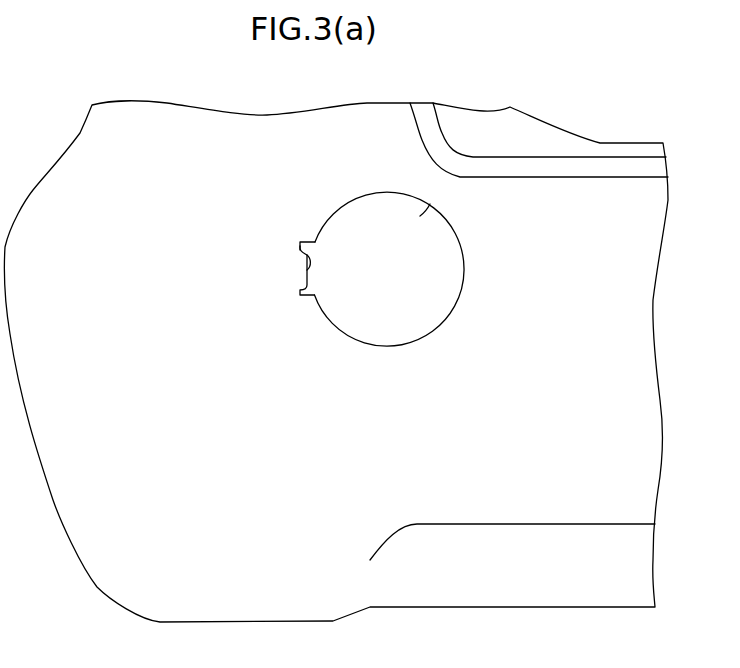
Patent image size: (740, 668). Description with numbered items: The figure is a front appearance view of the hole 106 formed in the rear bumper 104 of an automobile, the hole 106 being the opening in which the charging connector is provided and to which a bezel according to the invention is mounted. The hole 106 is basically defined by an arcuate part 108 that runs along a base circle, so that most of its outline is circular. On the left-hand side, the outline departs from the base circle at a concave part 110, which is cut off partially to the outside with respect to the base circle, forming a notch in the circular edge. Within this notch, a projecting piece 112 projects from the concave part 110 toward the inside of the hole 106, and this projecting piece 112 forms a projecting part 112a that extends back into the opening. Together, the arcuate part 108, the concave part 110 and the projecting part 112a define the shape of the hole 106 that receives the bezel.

The rear bumper 104 is at (165, 115).
The hole 106 is at (425, 296).
The arcuate part 108 is at (422, 216).
The concave part 110 is at (302, 294).
The projecting piece 112 is at (304, 270).
The projecting part 112a is at (300, 246).